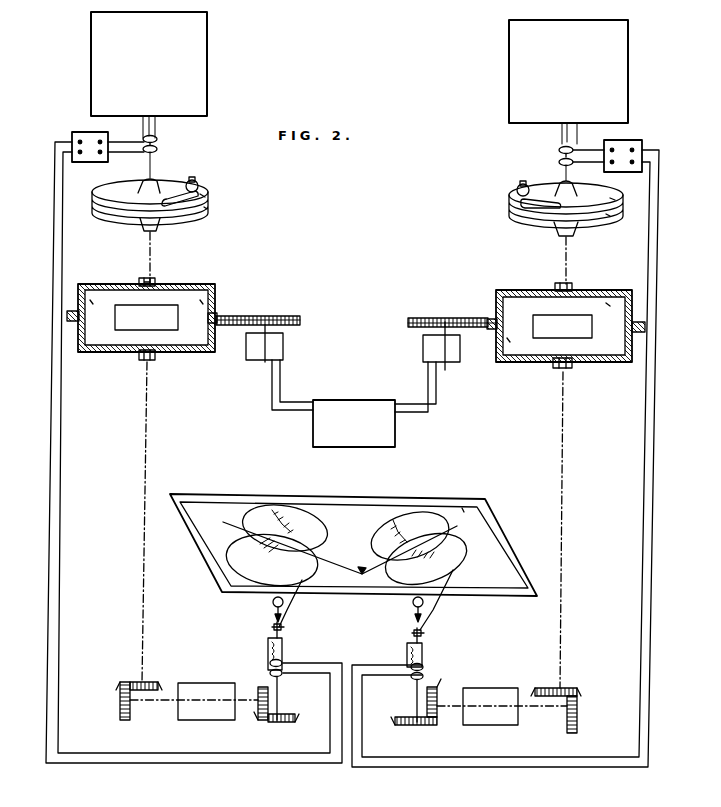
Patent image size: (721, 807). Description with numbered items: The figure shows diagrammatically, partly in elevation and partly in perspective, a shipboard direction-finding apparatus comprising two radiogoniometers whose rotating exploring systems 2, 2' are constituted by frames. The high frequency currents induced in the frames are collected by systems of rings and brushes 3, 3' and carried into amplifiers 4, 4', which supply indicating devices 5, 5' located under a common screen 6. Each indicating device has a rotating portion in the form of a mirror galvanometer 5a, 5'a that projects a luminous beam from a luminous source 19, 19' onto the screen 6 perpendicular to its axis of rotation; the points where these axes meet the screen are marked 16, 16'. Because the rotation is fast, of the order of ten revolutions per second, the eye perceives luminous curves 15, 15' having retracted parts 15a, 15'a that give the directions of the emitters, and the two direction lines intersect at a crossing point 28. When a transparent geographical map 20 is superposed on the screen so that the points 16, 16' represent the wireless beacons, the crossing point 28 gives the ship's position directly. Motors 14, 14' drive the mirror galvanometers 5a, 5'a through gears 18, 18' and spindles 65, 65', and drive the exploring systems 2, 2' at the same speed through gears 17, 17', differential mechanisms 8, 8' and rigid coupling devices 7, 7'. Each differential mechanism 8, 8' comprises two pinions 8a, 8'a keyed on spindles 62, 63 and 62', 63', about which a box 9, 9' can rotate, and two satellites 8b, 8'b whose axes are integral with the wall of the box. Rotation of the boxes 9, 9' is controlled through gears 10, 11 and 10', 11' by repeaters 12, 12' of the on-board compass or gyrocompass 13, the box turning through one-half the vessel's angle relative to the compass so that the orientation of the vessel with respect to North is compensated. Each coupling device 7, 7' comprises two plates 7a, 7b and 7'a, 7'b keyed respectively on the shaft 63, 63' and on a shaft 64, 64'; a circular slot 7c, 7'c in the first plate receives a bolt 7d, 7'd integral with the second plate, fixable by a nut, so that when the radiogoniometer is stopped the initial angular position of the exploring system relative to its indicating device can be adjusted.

The rotating exploring system 2 is at (149, 75).
The rotating exploring system 2' is at (568, 82).
The system of rings and brushes 3 is at (134, 133).
The system of rings and brushes 3' is at (581, 143).
The amplifier 4 is at (98, 136).
The amplifier 4' is at (613, 146).
The indicating device 5 is at (264, 657).
The indicating device 5' is at (427, 661).
The rotating portion (mirror galvanometer) 5a is at (273, 627).
The rotating portion (mirror galvanometer) 5'a is at (428, 635).
The screen 6 is at (485, 510).
The rigid coupling device 7 is at (160, 205).
The rigid coupling device 7' is at (546, 208).
The plate 7a is at (207, 197).
The plate 7'a is at (628, 192).
The plate 7b is at (206, 210).
The plate 7'b is at (624, 226).
The circular slot 7c is at (173, 198).
The circular slot 7'c is at (526, 219).
The bolt 7d is at (196, 183).
The bolt 7'd is at (509, 182).
The differential mechanism 8 is at (146, 314).
The differential mechanism 8' is at (564, 319).
The pinion 8a is at (142, 311).
The pinion 8'a is at (562, 326).
The satellite 8b is at (97, 338).
The satellite 8'b is at (554, 317).
The box 9 is at (258, 302).
The box 9' is at (452, 306).
The gear 10 is at (158, 294).
The gear 10' is at (553, 344).
The gear 11 is at (258, 306).
The gear 11' is at (452, 311).
The repeater 12 is at (264, 343).
The repeater 12' is at (441, 346).
The compass or gyrocompass 13 is at (354, 423).
The motor 14 is at (194, 712).
The motor 14' is at (502, 719).
The luminous curve 15 is at (285, 528).
The luminous curve 15' is at (409, 535).
The retracted part 15a is at (306, 554).
The retracted part 15'a is at (428, 536).
The point of intersection of axis of rotation 16 is at (272, 560).
The point of intersection of axis of rotation 16' is at (426, 559).
The gear 17 is at (139, 704).
The gear 17' is at (556, 710).
The gear 18 is at (277, 704).
The gear 18' is at (413, 702).
The luminous source 19 is at (274, 603).
The luminous source 19' is at (435, 600).
The geographical map 20 is at (462, 510).
The crossing point 28 is at (340, 548).
The spindle 62 is at (167, 522).
The spindle 62' is at (583, 530).
The spindle (shaft) 63 is at (171, 258).
The spindle (shaft) 63' is at (584, 260).
The shaft 64 is at (166, 157).
The shaft 64' is at (550, 163).
The spindle 65 is at (295, 698).
The spindle 65' is at (436, 694).